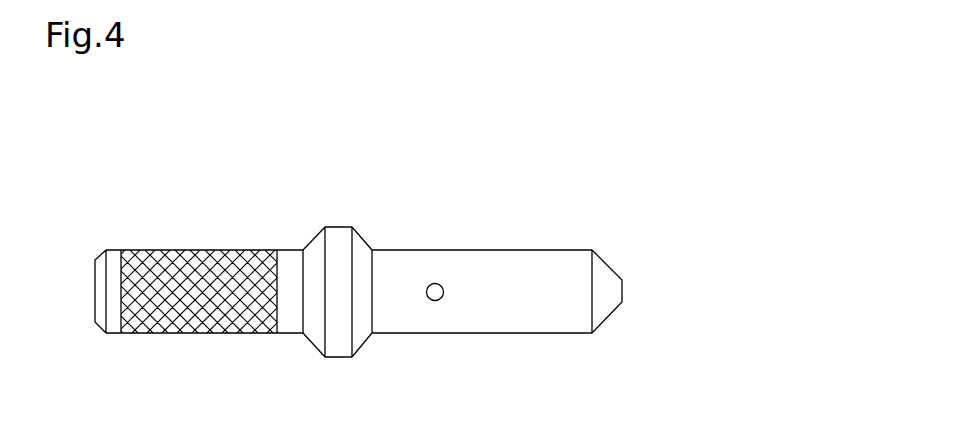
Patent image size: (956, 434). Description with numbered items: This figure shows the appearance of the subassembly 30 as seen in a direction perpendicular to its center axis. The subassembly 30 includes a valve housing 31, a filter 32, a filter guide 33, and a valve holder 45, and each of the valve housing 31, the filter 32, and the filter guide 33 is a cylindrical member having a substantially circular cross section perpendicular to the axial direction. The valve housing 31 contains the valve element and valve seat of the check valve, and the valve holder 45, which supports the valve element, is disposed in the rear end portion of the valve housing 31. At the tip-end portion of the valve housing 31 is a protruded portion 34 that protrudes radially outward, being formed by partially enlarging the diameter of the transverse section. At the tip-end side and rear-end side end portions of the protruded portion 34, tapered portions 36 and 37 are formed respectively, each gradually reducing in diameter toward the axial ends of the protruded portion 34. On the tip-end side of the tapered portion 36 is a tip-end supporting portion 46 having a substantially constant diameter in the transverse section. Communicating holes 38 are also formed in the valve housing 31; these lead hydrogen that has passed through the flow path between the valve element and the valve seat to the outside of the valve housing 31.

The subassembly 30 is at (603, 198).
The valve housing 31 is at (495, 248).
The filter 32 is at (198, 248).
The filter guide 33 is at (112, 247).
The protruded portion 34 is at (337, 235).
The tapered portion 36 is at (318, 237).
The tapered portion 37 is at (363, 233).
The communicating hole 38 is at (441, 298).
The valve holder 45 is at (603, 308).
The tip-end supporting portion 46 is at (292, 248).